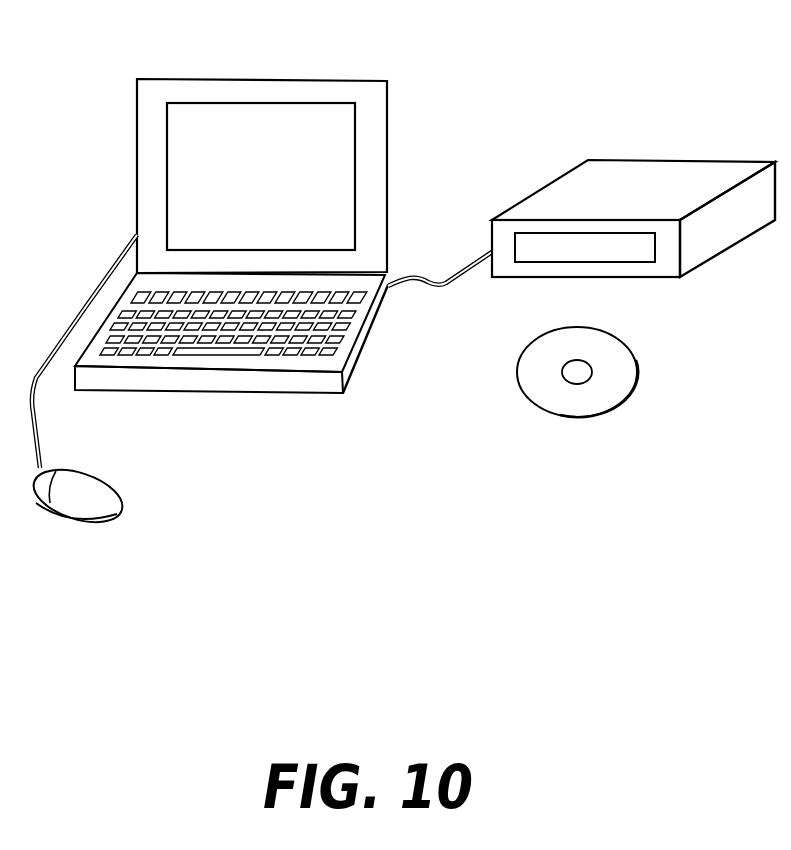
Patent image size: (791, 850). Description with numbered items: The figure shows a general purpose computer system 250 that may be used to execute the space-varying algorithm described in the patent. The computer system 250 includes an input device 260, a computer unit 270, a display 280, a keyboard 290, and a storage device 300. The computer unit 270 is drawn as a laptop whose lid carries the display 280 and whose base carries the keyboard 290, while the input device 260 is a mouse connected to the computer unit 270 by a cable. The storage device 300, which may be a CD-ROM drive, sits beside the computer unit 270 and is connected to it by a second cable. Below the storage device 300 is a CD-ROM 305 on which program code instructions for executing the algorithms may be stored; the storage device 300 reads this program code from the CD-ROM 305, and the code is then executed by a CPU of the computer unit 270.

The computer system 250 is at (657, 55).
The input device 260 is at (108, 503).
The computer unit 270 is at (137, 192).
The display 280 is at (340, 154).
The keyboard 290 is at (287, 347).
The storage device 300 is at (700, 253).
The CD-ROM 305 is at (620, 368).